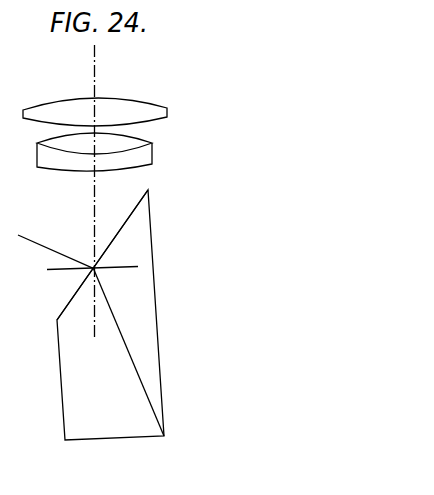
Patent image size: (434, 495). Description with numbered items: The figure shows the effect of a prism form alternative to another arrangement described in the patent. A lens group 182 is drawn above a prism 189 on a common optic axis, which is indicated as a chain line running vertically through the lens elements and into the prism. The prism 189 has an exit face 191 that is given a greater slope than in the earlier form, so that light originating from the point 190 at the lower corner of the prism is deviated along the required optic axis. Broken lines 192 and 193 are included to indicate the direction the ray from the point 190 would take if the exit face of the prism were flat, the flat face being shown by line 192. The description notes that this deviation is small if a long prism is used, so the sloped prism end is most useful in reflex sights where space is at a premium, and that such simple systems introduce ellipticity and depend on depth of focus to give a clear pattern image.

The lens system 182 is at (172, 94).
The prism 189 is at (68, 360).
The point 190 is at (164, 437).
The exit face 191 is at (123, 225).
The broken line 192 is at (62, 270).
The broken line 193 is at (42, 245).